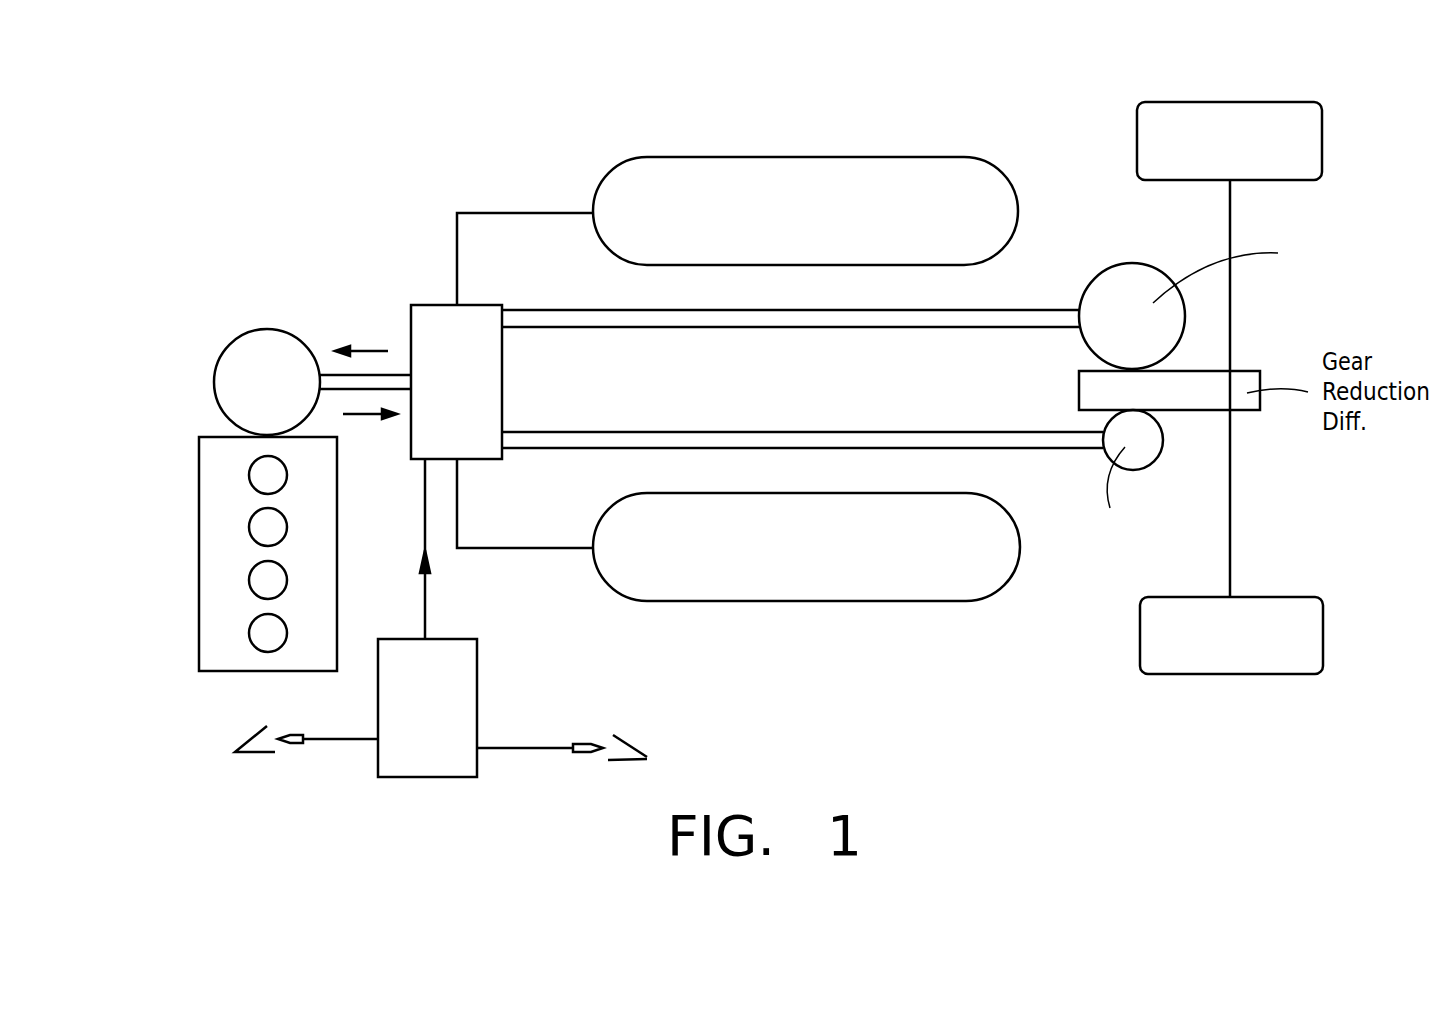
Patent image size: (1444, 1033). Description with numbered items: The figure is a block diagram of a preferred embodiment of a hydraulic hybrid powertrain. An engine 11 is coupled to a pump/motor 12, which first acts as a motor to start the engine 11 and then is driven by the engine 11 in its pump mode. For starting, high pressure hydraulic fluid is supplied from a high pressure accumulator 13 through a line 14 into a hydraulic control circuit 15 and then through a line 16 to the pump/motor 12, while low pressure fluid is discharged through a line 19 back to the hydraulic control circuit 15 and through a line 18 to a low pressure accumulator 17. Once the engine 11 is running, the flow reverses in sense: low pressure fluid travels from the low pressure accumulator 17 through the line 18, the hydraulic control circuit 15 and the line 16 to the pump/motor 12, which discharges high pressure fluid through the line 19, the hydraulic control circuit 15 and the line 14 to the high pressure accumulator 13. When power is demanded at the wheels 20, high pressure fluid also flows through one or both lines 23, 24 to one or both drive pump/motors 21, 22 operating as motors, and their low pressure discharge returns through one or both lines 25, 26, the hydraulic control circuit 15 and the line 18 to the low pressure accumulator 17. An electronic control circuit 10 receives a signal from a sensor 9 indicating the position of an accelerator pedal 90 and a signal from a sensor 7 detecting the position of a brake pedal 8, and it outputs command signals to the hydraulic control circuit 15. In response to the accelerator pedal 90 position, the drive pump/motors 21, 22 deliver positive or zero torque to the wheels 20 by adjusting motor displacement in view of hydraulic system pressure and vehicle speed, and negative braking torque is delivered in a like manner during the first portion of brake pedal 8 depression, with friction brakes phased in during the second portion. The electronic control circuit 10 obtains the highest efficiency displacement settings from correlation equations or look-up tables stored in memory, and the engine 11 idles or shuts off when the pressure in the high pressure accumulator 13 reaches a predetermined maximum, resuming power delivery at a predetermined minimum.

The sensor 7 is at (583, 757).
The brake pedal 8 is at (632, 762).
The sensor 9 is at (295, 752).
The accelerator pedal 90 is at (247, 753).
The electronic control circuit 10 is at (457, 695).
The engine 11 is at (207, 590).
The pump/motor 12 is at (275, 345).
The high pressure accumulator 13 is at (798, 157).
The line 14 is at (483, 200).
The hydraulic control circuit 15 is at (487, 390).
The line 16 is at (360, 372).
The low pressure accumulator 17 is at (822, 601).
The line 18 is at (479, 548).
The line 19 is at (359, 392).
The wheels 20 is at (1260, 100).
The drive pump/motor 21 is at (1132, 262).
The drive pump/motor 22 is at (1132, 468).
The line 23 is at (957, 310).
The line 24 is at (957, 432).
The line 25 is at (957, 327).
The line 26 is at (957, 448).